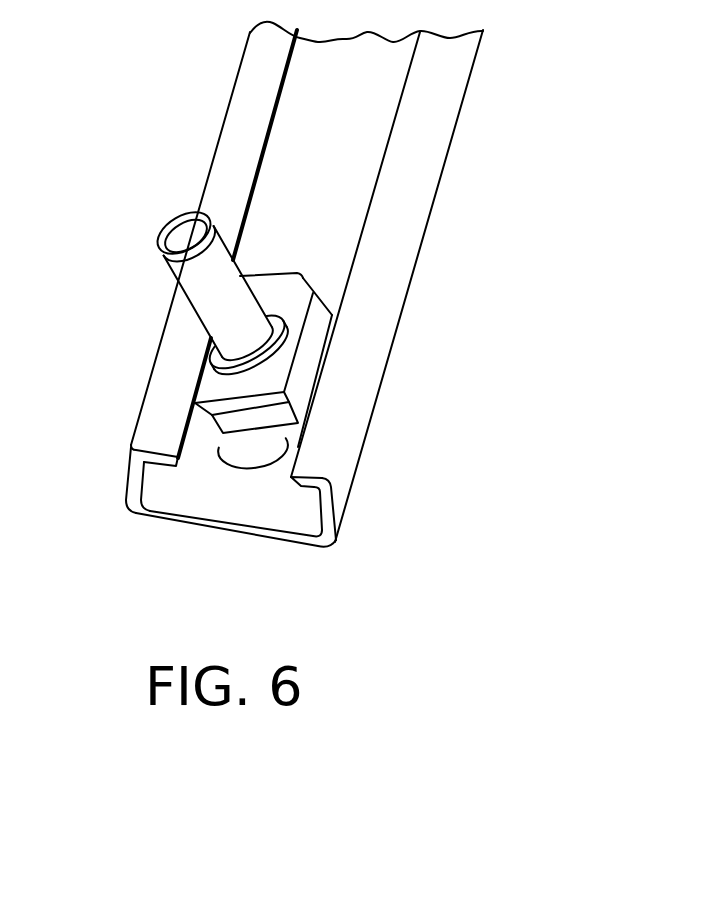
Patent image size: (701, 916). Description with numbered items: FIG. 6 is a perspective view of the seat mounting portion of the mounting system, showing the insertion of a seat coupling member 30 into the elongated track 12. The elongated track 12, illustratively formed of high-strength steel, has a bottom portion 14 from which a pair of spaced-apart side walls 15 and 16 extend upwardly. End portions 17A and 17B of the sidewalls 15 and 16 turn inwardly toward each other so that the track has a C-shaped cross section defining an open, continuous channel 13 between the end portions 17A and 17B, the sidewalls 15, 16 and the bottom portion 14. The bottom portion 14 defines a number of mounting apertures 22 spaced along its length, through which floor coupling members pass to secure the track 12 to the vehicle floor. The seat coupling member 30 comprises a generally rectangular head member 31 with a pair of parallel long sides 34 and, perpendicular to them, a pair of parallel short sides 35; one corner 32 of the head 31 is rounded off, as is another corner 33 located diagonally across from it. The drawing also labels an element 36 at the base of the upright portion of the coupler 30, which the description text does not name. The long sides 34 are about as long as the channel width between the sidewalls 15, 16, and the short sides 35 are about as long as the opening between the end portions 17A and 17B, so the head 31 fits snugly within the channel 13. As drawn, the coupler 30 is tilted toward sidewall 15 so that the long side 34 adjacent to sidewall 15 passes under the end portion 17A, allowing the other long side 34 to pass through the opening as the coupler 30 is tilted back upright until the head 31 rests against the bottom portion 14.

The elongated track 12 is at (455, 138).
The channel 13 is at (287, 160).
The bottom portion 14 is at (278, 538).
The side wall 15 is at (131, 478).
The side wall 16 is at (332, 515).
The end portion 17A is at (141, 493).
The end portion 17B is at (321, 527).
The mounting aperture 22 is at (257, 457).
The seat coupling member 30 is at (185, 225).
The head member 31 is at (210, 380).
The corner 32 is at (320, 299).
The corner 33 is at (192, 418).
The long side 34 is at (313, 338).
The short side 35 is at (283, 277).
The collar 36 is at (187, 308).